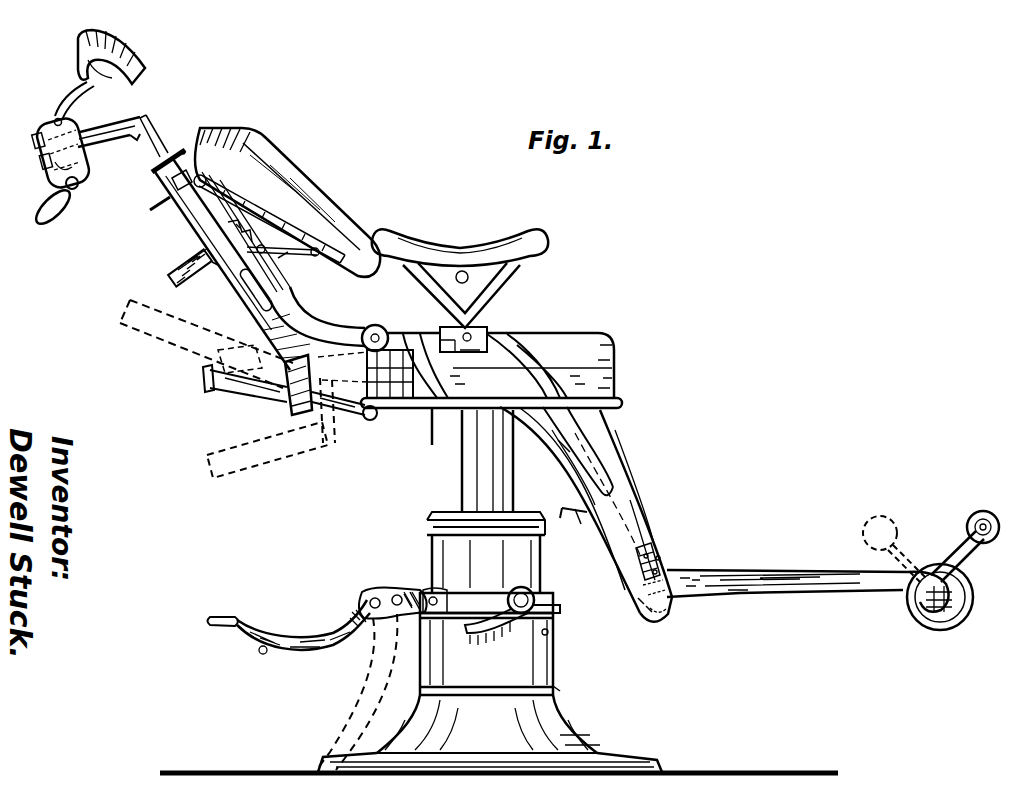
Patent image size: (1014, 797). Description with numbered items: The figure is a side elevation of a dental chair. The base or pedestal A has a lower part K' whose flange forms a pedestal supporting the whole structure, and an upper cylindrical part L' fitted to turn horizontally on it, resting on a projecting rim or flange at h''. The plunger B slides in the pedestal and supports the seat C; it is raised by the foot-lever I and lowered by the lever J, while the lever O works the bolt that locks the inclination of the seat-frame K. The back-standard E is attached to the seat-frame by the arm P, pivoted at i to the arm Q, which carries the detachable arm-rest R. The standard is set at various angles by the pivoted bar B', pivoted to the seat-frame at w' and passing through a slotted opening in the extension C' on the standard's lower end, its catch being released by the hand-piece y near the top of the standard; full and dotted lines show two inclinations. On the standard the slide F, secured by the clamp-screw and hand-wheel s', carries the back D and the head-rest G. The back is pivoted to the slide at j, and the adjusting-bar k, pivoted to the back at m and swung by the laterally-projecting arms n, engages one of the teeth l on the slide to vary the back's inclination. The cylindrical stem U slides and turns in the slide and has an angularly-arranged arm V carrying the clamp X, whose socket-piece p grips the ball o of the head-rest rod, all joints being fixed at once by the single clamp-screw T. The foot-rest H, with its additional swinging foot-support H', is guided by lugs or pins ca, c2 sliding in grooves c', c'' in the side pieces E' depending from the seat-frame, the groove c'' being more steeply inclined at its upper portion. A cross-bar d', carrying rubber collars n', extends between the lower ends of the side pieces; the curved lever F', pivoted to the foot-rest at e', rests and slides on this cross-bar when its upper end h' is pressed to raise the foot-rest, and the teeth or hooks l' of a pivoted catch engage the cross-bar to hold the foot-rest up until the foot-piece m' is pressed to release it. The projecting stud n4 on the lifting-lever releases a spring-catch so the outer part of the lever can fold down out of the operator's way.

The base or pedestal A is at (494, 641).
The plunger B is at (478, 461).
The pivoted bar B' is at (284, 395).
The seat C is at (287, 396).
The extension C' is at (501, 350).
The back D is at (287, 202).
The back-standard E is at (244, 318).
The side pieces E' is at (586, 514).
The slide F is at (272, 258).
The curved lever F' is at (630, 579).
The head-rest G is at (117, 56).
The foot-rest H is at (820, 584).
The swinging foot-support H' is at (931, 538).
The foot-lever I is at (292, 635).
The lowering-lever J is at (508, 628).
The seat-frame K is at (331, 240).
The lower part of base K' is at (490, 733).
The upper cylindrical part of base L' is at (501, 552).
The lever O is at (430, 428).
The arm P is at (314, 322).
The arm Q is at (418, 344).
The arm-rest R is at (460, 267).
The clamp-screw T is at (62, 210).
The cylindrical stem U is at (166, 152).
The angularly-arranged arm V is at (109, 127).
The clamp X is at (42, 140).
The lug or pin c2 is at (671, 536).
The groove c' is at (672, 550).
The lug or pin ca is at (688, 554).
The groove c'' is at (558, 461).
The cross-bar d' is at (666, 624).
The pivot e' is at (741, 608).
The upper end of lever h' is at (571, 522).
The rim or flange h'' is at (572, 684).
The pivot i is at (375, 325).
The pivot j is at (190, 158).
The adjusting-bar k is at (277, 264).
The teeth l is at (127, 186).
The teeth or hooks l' is at (626, 618).
The pivot m is at (315, 262).
The foot-piece m' is at (562, 501).
The laterally-projecting arms n is at (263, 239).
The collars n' is at (489, 617).
The projecting stud n4 is at (379, 577).
The ball o is at (65, 113).
The socket-piece p is at (80, 172).
The clamp-screw and hand-wheel s' is at (189, 274).
The pivot w' is at (374, 425).
The hand-piece y is at (153, 207).